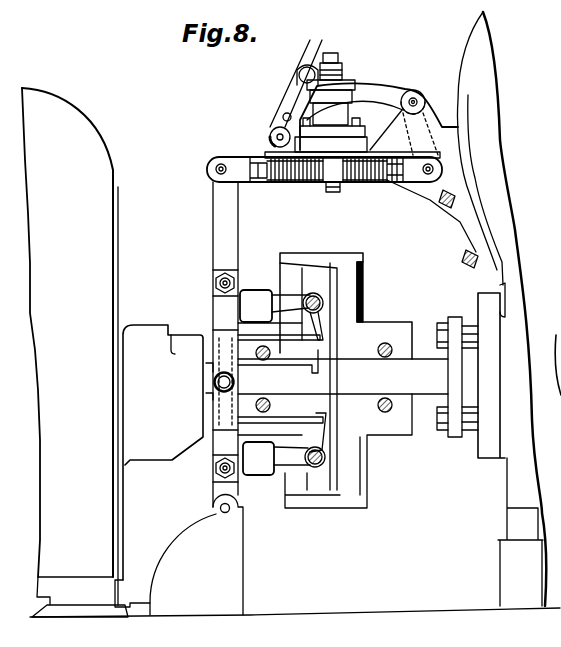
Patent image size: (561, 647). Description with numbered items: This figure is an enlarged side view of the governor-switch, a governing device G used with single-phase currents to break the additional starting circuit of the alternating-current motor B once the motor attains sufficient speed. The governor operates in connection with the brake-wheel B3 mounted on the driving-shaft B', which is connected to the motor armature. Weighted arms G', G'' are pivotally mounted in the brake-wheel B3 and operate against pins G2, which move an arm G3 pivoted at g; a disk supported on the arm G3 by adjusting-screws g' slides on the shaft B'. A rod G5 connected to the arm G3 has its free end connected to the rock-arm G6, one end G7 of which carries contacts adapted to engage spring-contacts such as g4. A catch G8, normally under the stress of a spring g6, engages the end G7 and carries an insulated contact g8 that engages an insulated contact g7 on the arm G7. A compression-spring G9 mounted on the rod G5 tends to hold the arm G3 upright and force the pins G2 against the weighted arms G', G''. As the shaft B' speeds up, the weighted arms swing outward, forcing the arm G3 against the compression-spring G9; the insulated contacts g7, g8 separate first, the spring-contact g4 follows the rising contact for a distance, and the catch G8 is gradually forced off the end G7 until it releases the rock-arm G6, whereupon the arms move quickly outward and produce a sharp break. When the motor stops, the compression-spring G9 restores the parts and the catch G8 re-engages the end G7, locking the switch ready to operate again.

The alternating-current motor B is at (75, 352).
The driving-shaft B' is at (343, 376).
The brake-wheel B3 is at (368, 257).
The governing device G is at (330, 189).
The weighted arms G' is at (281, 315).
The weighted arms G'' is at (284, 444).
The pins G2 is at (292, 341).
The arm G3 is at (212, 344).
The rod G5 is at (268, 182).
The rock-arm G6 is at (432, 131).
The end of rock-arm G7 is at (383, 88).
The catch G8 is at (299, 80).
The compression-spring G9 is at (362, 182).
The pivot g is at (196, 554).
The adjusting-screws g' is at (203, 382).
The spring-contact g4 is at (300, 106).
The spring g6 is at (269, 137).
The insulated contact g7 is at (332, 50).
The insulated contact g8 is at (309, 62).